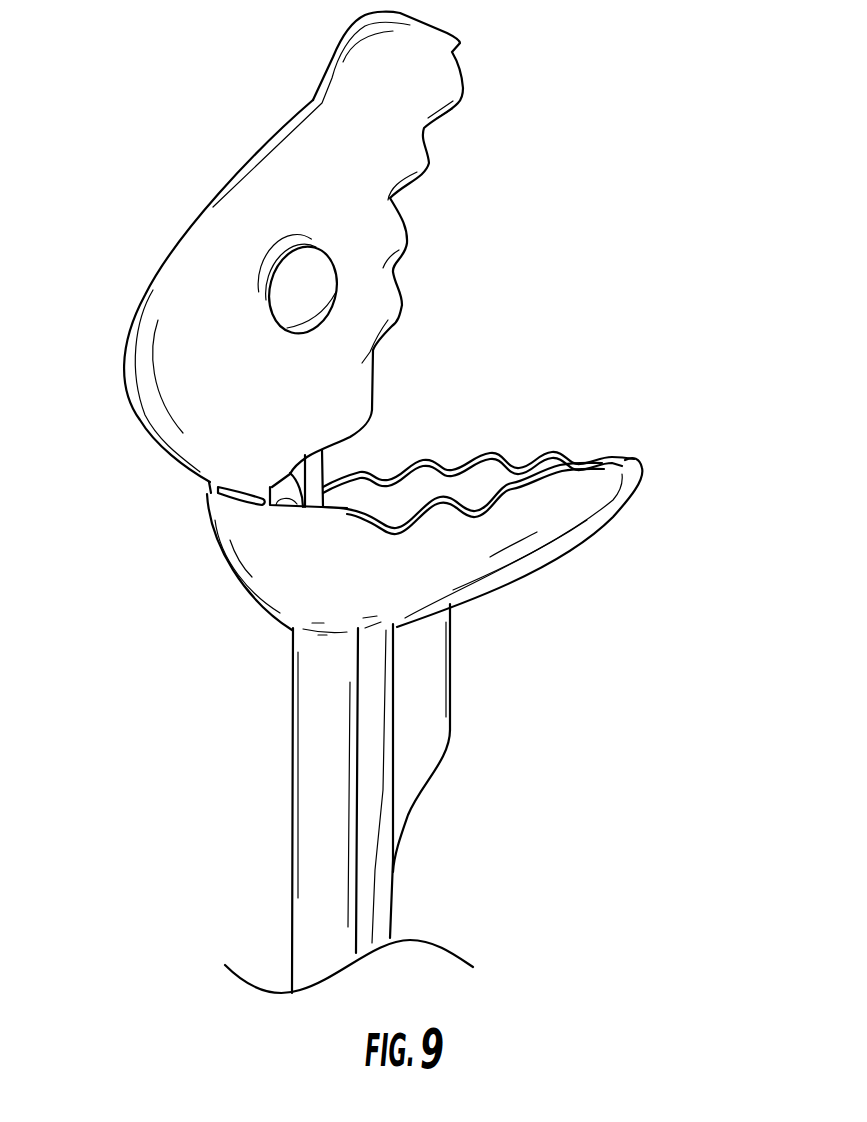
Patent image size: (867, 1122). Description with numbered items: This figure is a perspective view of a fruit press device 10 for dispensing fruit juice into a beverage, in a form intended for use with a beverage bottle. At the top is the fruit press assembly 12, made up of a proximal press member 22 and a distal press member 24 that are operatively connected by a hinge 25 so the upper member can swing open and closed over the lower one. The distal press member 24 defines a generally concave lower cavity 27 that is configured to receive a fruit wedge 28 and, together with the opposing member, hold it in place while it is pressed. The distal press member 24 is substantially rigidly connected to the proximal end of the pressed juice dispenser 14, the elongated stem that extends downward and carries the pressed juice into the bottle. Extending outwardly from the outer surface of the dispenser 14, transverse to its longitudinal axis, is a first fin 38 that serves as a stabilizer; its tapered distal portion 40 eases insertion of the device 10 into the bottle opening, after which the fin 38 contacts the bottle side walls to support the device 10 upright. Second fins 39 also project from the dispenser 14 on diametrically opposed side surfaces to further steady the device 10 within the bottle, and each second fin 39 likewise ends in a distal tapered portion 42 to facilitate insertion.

The fruit press device 10 is at (650, 157).
The fruit press assembly 12 is at (108, 205).
The pressed juice dispenser 14 is at (323, 785).
The proximal press member 22 is at (322, 113).
The distal press member 24 is at (600, 509).
The hinge 25 is at (265, 497).
The lower cavity 27 is at (385, 507).
The fruit wedge 28 is at (440, 168).
The first fin 38 is at (432, 697).
The second fins 39 is at (378, 662).
The tapered distal portion 40 is at (422, 787).
The distal tapered portion 42 is at (380, 845).